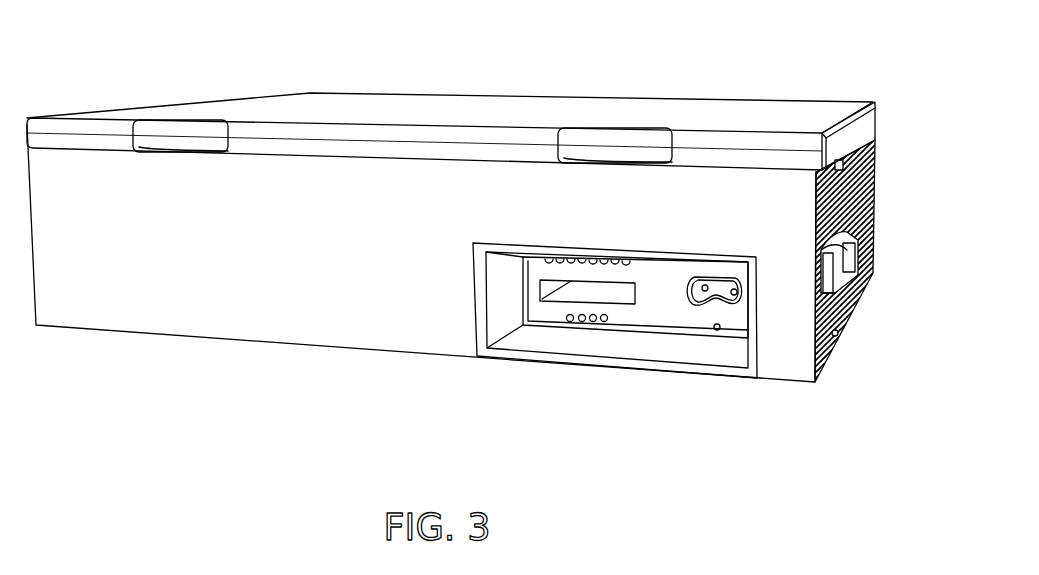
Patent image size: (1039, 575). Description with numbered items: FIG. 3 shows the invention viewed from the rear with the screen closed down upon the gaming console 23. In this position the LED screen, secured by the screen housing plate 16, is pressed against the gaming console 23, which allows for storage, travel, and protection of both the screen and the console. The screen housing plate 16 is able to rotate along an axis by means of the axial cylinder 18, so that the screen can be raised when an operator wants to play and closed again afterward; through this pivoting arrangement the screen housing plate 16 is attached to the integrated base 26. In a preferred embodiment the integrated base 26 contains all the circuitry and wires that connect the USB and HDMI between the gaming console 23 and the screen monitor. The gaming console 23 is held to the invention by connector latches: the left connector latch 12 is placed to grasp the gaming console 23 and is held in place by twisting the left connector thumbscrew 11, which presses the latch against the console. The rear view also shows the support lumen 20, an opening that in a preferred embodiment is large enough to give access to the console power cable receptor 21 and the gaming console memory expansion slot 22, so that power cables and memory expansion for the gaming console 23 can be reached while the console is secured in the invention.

The left connector thumbscrew 11 is at (863, 277).
The left connector latch 12 is at (533, 218).
The screen housing plate 16 is at (718, 113).
The axial cylinder 18 is at (168, 130).
The support lumen 20 is at (576, 250).
The console power cable receptor 21 is at (717, 288).
The gaming console memory expansion slot 22 is at (548, 283).
The gaming console 23 is at (872, 187).
The integrated base 26 is at (220, 300).